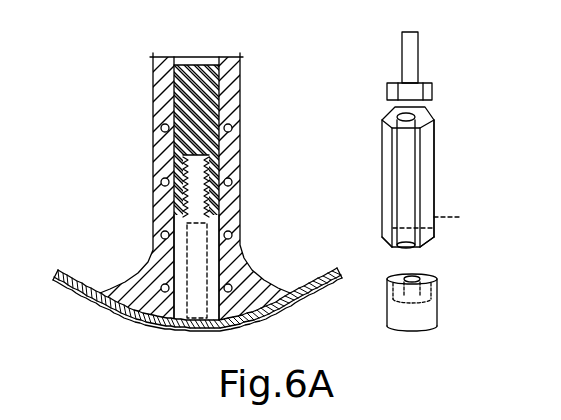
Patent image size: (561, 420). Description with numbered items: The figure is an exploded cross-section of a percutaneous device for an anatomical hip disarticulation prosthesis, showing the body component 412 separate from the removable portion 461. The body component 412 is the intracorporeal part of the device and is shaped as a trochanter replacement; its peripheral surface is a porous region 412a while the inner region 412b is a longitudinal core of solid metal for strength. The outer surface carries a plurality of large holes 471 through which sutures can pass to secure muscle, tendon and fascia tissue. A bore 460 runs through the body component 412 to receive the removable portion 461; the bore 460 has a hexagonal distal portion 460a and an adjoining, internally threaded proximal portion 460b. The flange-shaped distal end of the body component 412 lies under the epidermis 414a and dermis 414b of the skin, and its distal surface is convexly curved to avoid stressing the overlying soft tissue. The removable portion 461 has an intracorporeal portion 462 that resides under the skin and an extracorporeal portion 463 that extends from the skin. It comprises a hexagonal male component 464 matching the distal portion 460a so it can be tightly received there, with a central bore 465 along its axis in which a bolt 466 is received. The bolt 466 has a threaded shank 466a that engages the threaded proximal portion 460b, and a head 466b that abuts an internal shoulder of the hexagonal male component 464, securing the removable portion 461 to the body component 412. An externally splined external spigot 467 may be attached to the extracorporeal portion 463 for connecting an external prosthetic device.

The body component 412 is at (272, 205).
The porous region 412a is at (240, 280).
The inner region 412b is at (195, 88).
The holes 471 is at (160, 127).
The bore 460 is at (196, 322).
The distal portion of the bore 460a is at (193, 243).
The proximal portion of the bore 460b is at (195, 188).
The epidermis 414a is at (66, 284).
The dermis 414b is at (78, 258).
The bolt 466 is at (407, 54).
The threaded shank 466a is at (408, 42).
The head 466b is at (393, 95).
The removable portion 461 is at (411, 173).
The intracorporeal portion 462 is at (453, 198).
The extracorporeal portion 463 is at (453, 228).
The hexagonal male component 464 is at (410, 182).
The central bore 465 is at (413, 115).
The external spigot 467 is at (453, 292).